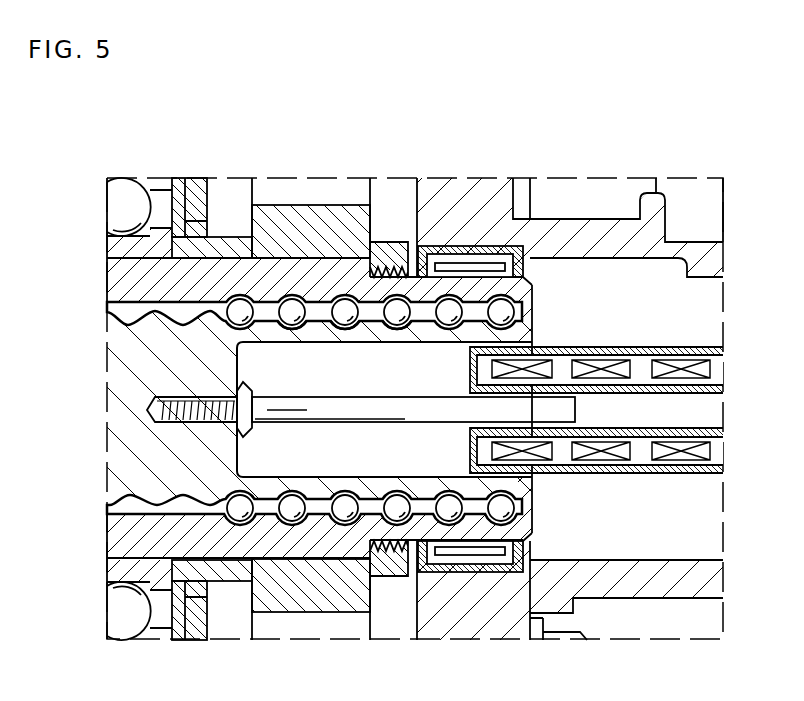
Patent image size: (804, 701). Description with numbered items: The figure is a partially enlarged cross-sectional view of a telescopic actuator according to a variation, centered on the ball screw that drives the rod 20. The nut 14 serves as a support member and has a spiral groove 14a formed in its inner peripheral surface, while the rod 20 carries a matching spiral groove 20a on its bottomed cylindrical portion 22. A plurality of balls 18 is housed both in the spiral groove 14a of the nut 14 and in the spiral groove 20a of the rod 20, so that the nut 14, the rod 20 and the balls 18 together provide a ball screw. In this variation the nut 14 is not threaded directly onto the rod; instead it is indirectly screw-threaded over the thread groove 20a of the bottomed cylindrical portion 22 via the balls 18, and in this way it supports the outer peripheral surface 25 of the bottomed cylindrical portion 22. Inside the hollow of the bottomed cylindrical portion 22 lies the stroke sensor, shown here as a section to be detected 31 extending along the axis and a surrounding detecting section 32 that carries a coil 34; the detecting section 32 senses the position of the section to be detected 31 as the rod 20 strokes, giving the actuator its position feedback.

The nut 14 is at (292, 276).
The spiral groove 14a is at (534, 287).
The balls 18 is at (287, 327).
The rod 20 is at (152, 382).
The spiral groove 20a is at (346, 331).
The bottomed cylindrical portion 22 is at (534, 325).
The outer peripheral surface 25 is at (476, 306).
The section to be detected 31 is at (380, 412).
The detecting section 32 is at (651, 340).
The coil 34 is at (533, 462).